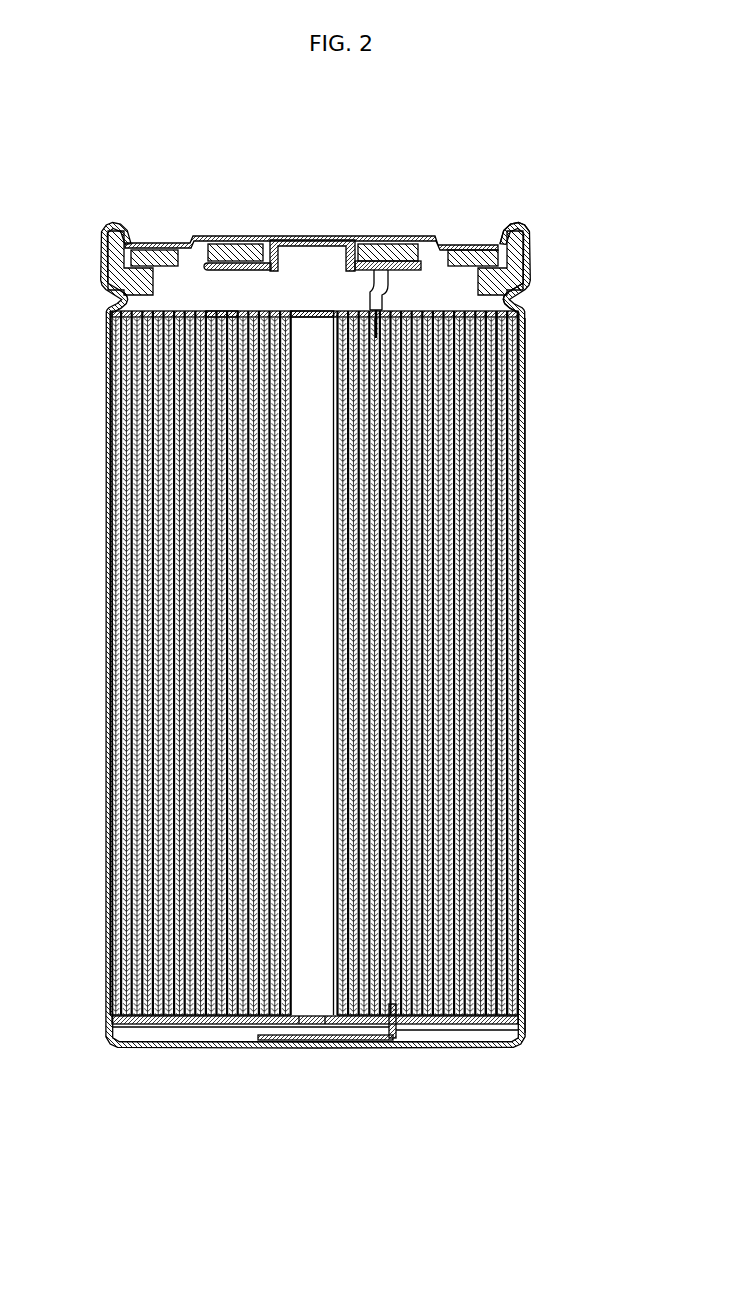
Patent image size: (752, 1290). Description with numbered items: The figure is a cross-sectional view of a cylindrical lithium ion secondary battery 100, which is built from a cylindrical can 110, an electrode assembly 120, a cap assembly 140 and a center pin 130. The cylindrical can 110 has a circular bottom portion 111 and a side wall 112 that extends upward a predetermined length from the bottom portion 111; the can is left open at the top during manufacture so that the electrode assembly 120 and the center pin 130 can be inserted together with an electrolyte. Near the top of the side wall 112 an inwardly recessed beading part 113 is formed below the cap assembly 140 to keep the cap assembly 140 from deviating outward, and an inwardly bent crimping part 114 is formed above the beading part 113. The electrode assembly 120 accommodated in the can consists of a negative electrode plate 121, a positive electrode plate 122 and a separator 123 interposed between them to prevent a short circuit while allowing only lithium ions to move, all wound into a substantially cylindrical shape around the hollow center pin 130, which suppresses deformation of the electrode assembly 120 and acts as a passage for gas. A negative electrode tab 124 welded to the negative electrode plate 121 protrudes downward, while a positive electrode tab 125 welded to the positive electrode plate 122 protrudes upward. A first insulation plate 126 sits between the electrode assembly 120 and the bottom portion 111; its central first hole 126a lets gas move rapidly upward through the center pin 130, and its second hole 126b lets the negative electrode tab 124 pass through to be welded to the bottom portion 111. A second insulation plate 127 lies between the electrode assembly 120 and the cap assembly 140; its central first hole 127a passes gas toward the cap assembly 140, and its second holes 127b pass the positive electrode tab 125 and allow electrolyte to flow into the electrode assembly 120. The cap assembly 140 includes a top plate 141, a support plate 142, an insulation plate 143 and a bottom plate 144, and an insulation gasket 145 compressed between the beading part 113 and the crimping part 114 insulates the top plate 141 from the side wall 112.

The cylindrical lithium ion secondary battery 100 is at (80, 116).
The cylindrical can 110 is at (522, 583).
The bottom portion 111 is at (186, 1041).
The side wall 112 is at (520, 800).
The beading part 113 is at (520, 290).
The crimping part 114 is at (508, 219).
The electrode assembly 120 is at (511, 512).
The negative electrode plate 121 is at (504, 363).
The positive electrode plate 122 is at (481, 435).
The separator 123 is at (490, 383).
The negative electrode tab 124 is at (335, 1023).
The positive electrode tab 125 is at (362, 283).
The first insulation plate 126 is at (484, 1013).
The first hole 126a is at (302, 1012).
The second hole 126b is at (385, 1032).
The second insulation plate 127 is at (513, 306).
The first hole 127a is at (310, 303).
The second holes 127b is at (220, 303).
The center pin 130 is at (330, 690).
The cap assembly 140 is at (363, 235).
The top plate 141 is at (245, 228).
The support plate 142 is at (215, 236).
The insulation plate 143 is at (396, 238).
The bottom plate 144 is at (309, 232).
The insulation gasket 145 is at (522, 240).